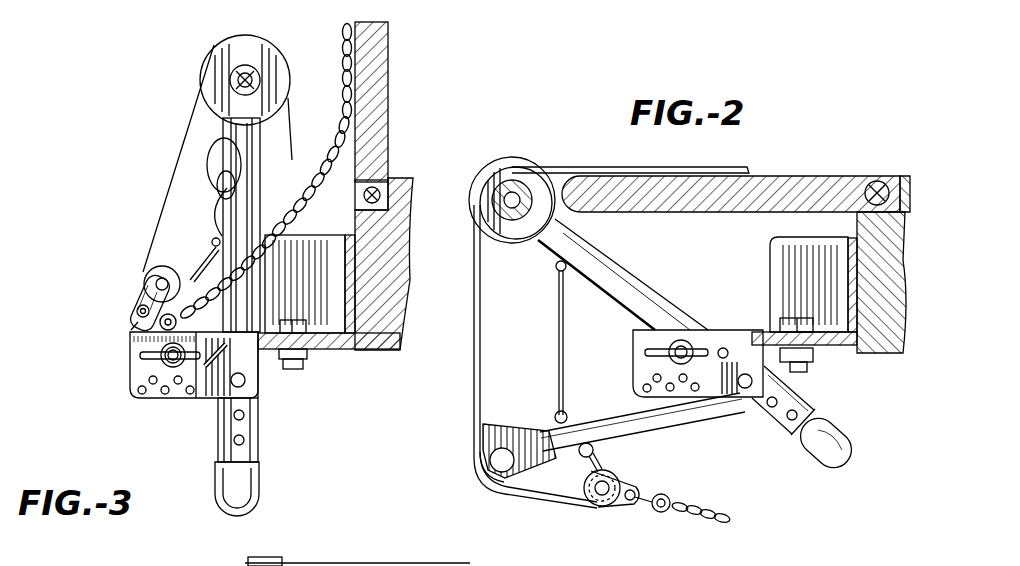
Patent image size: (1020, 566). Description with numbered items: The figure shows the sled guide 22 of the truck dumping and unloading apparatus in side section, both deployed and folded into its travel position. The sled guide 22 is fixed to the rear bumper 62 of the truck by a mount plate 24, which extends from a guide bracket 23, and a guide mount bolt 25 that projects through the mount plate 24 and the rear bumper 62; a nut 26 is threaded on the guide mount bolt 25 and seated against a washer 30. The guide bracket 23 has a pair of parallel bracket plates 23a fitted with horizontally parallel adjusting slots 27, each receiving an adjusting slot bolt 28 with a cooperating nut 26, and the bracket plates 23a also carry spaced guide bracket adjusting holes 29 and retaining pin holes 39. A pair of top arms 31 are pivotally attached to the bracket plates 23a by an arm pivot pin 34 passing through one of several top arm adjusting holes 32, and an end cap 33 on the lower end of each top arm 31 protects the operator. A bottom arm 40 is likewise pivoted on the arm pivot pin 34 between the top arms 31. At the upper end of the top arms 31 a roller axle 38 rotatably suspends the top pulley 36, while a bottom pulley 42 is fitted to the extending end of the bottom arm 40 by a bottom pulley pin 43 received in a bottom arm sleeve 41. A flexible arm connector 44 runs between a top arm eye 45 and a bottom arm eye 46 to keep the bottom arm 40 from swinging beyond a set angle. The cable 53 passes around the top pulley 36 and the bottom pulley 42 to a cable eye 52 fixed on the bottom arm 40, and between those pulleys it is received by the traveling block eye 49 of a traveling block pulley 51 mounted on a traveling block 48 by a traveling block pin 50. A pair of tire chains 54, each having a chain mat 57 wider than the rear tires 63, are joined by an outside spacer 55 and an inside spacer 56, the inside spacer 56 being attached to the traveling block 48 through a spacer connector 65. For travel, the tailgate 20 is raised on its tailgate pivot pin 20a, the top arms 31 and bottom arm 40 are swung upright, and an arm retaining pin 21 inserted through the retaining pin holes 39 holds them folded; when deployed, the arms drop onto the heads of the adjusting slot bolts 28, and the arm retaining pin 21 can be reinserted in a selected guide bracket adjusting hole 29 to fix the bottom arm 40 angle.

In FIG. 3, the tailgate 20 is at (380, 84).
In FIG. 2, the tailgate 20 is at (775, 190).
In FIG. 3, the tailgate pivot pin 20a is at (388, 176).
In FIG. 2, the tailgate pivot pin 20a is at (898, 178).
In FIG. 3, the arm retaining pin 21 is at (248, 376).
In FIG. 2, the arm retaining pin 21 is at (745, 381).
In FIG. 3, the sled guide 22 is at (165, 184).
In FIG. 2, the sled guide 22 is at (466, 432).
In FIG. 3, the guide bracket 23 is at (158, 408).
In FIG. 2, the guide bracket 23 is at (637, 352).
In FIG. 3, the bracket plates 23a is at (206, 384).
In FIG. 2, the bracket plates 23a is at (640, 372).
In FIG. 3, the mount plate 24 is at (348, 336).
In FIG. 2, the mount plate 24 is at (822, 330).
In FIG. 3, the guide mount bolt 25 is at (332, 322).
In FIG. 2, the guide mount bolt 25 is at (790, 318).
In FIG. 3, the nut 26 is at (168, 360).
In FIG. 2, the nut 26 is at (688, 348).
In FIG. 3, the adjusting slots 27 is at (166, 352).
In FIG. 2, the adjusting slots 27 is at (650, 344).
In FIG. 3, the adjusting slot bolt 28 is at (172, 344).
In FIG. 2, the adjusting slot bolt 28 is at (683, 344).
In FIG. 3, the guide bracket adjusting holes 29 is at (178, 386).
In FIG. 2, the guide bracket adjusting holes 29 is at (675, 392).
In FIG. 3, the washer 30 is at (290, 320).
In FIG. 2, the washer 30 is at (812, 358).
In FIG. 3, the top arms 31 is at (266, 447).
In FIG. 2, the top arms 31 is at (612, 238).
In FIG. 3, the top arm adjusting holes 32 is at (246, 440).
In FIG. 2, the top arm adjusting holes 32 is at (790, 420).
In FIG. 3, the end cap 33 is at (258, 496).
In FIG. 2, the end cap 33 is at (848, 444).
In FIG. 3, the arm pivot pin 34 is at (260, 392).
In FIG. 2, the arm pivot pin 34 is at (742, 398).
In FIG. 3, the top pulley 36 is at (214, 76).
In FIG. 2, the top pulley 36 is at (500, 172).
In FIG. 3, the roller axle 38 is at (252, 70).
In FIG. 2, the roller axle 38 is at (520, 222).
In FIG. 2, the retaining pin holes 39 is at (724, 348).
In FIG. 2, the bottom arm 40 is at (655, 442).
In FIG. 2, the bottom arm sleeve 41 is at (526, 440).
In FIG. 3, the bottom pulley 42 is at (208, 155).
In FIG. 2, the bottom pulley 42 is at (480, 470).
In FIG. 2, the bottom pulley pin 43 is at (500, 446).
In FIG. 3, the flexible arm connector 44 is at (222, 218).
In FIG. 2, the flexible arm connector 44 is at (558, 298).
In FIG. 2, the top arm eye 45 is at (556, 270).
In FIG. 2, the bottom arm eye 46 is at (556, 412).
In FIG. 3, the traveling block 48 is at (130, 290).
In FIG. 2, the traveling block 48 is at (600, 512).
In FIG. 2, the traveling block eye 49 is at (630, 503).
In FIG. 3, the traveling block pin 50 is at (150, 272).
In FIG. 2, the traveling block pin 50 is at (608, 484).
In FIG. 2, the traveling block pulley 51 is at (546, 509).
In FIG. 3, the cable eye 52 is at (212, 250).
In FIG. 2, the cable eye 52 is at (580, 456).
In FIG. 3, the cable 53 is at (290, 130).
In FIG. 2, the cable 53 is at (640, 166).
In FIG. 3, the tire chains 54 is at (340, 80).
In FIG. 2, the tire chains 54 is at (735, 518).
In FIG. 3, the outside spacer 55 is at (575, 565).
In FIG. 3, the inside spacer 56 is at (137, 308).
In FIG. 2, the inside spacer 56 is at (665, 494).
In FIG. 3, the chain mat 57 is at (330, 152).
In FIG. 2, the chain mat 57 is at (708, 512).
In FIG. 3, the rear bumper 62 is at (355, 350).
In FIG. 2, the rear bumper 62 is at (862, 352).
In FIG. 3, the rear tires 63 is at (726, 557).
In FIG. 3, the spacer connector 65 is at (131, 326).
In FIG. 2, the spacer connector 65 is at (660, 512).